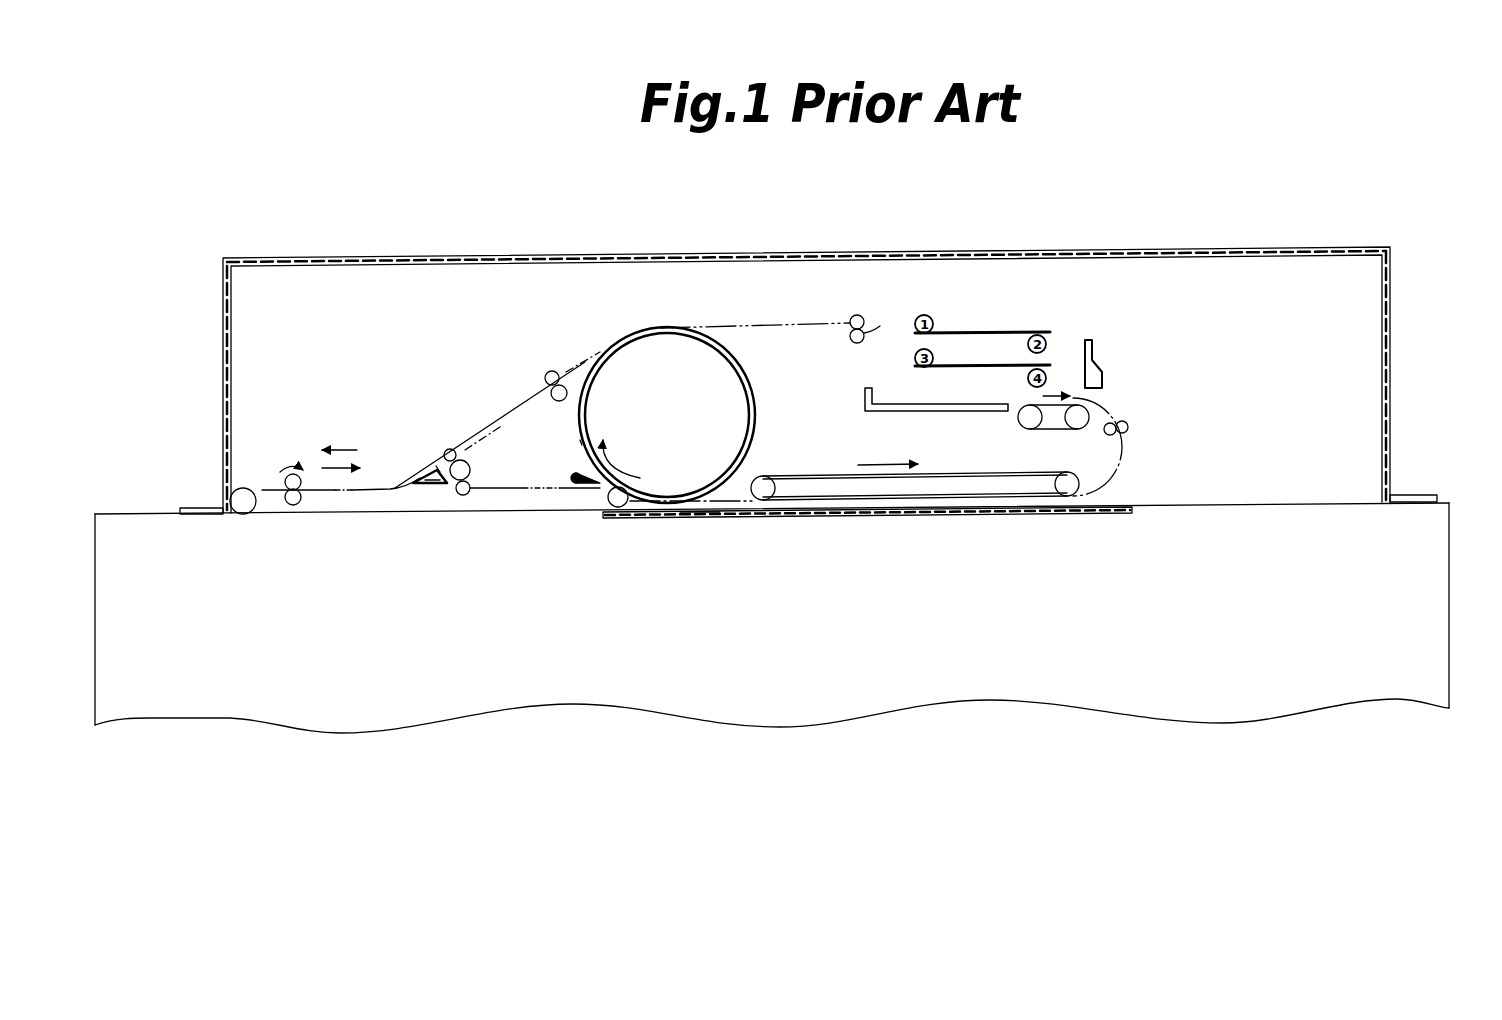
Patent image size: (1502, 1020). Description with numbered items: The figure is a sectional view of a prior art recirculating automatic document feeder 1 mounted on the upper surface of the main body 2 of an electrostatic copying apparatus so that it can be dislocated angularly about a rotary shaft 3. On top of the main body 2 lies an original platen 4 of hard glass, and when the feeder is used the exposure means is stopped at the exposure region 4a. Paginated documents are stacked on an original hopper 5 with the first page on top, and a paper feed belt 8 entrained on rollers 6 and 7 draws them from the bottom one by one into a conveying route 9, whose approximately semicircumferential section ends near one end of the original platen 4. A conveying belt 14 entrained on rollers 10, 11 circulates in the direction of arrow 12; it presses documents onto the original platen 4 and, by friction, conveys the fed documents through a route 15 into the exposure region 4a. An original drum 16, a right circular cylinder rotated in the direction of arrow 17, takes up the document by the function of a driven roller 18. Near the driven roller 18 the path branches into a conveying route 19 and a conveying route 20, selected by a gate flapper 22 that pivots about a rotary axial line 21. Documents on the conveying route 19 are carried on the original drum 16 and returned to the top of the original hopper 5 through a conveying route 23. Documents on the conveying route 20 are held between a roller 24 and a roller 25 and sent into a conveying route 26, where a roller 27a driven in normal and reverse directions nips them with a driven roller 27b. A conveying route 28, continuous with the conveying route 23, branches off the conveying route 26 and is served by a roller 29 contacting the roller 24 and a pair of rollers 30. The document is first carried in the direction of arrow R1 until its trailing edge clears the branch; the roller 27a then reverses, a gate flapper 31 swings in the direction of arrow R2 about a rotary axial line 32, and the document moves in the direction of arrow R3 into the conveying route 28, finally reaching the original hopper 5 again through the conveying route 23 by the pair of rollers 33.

The recirculating automatic document feeder 1 is at (1212, 196).
The main body 2 is at (1445, 562).
The rotary shaft 3 is at (242, 514).
The original platen 4 is at (1128, 515).
The exposure region 4a is at (700, 519).
The original hopper 5 is at (864, 402).
The roller 6 is at (1086, 430).
The roller 7 is at (1020, 428).
The paper feed belt 8 is at (1054, 421).
The conveying route 9 is at (1128, 442).
The roller 10 is at (1067, 497).
The roller 11 is at (763, 501).
The arrow 12 is at (886, 464).
The conveying belt 14 is at (822, 475).
The route 15 is at (920, 501).
The original drum 16 is at (645, 352).
The arrow 17 is at (621, 469).
The driven roller 18 is at (626, 506).
The conveying route 19 is at (580, 440).
The conveying route 20 is at (522, 491).
The rotary axial line 21 is at (573, 487).
The gate flapper 22 is at (582, 485).
The conveying route 23 is at (768, 323).
The roller 24 is at (471, 470).
The roller 25 is at (462, 496).
The conveying route 26 is at (373, 493).
The roller 27a is at (283, 478).
The driven roller 27b is at (293, 506).
The conveying route 28 is at (512, 412).
The roller 29 is at (455, 450).
The pair of rollers 30 is at (572, 366).
The gate flapper 31 is at (429, 470).
The rotary axial line 32 is at (436, 468).
The pair of rollers 33 is at (852, 318).
The arrow R1 is at (342, 450).
The arrow R2 is at (400, 474).
The arrow R3 is at (330, 469).